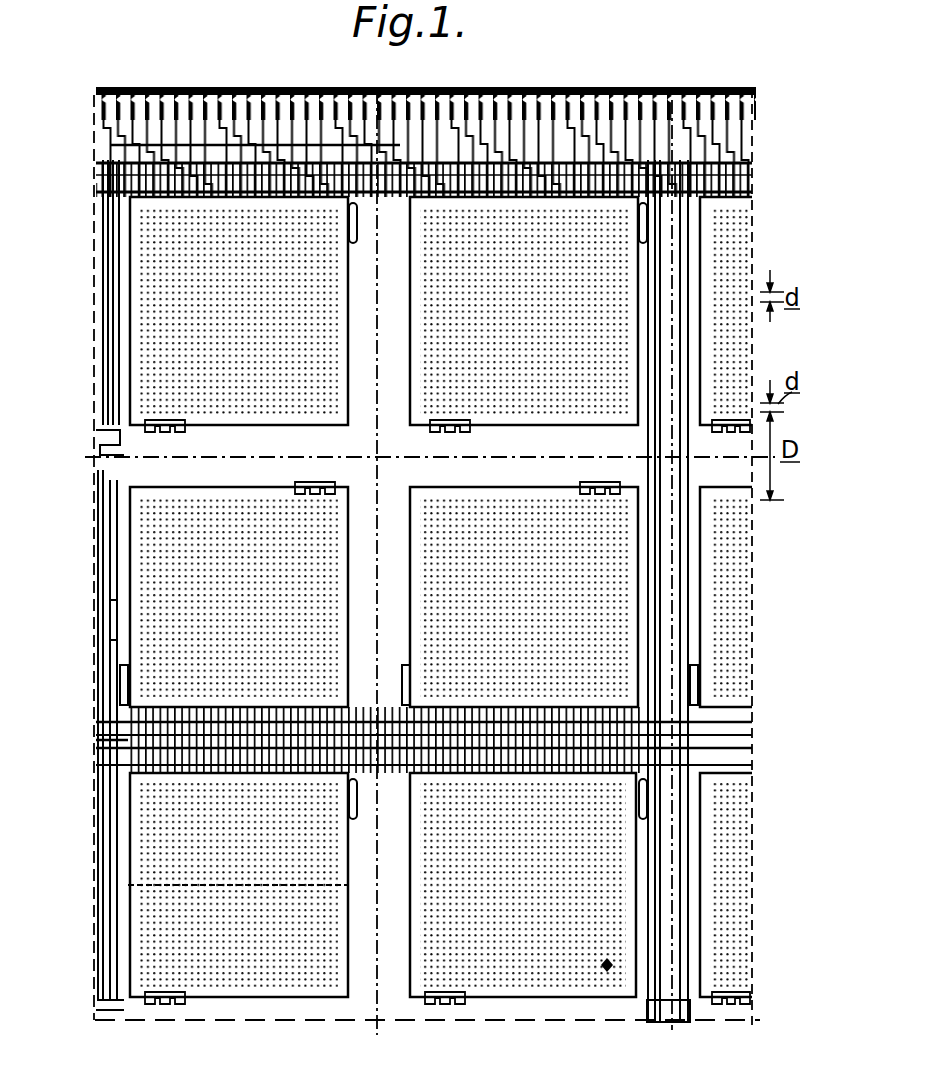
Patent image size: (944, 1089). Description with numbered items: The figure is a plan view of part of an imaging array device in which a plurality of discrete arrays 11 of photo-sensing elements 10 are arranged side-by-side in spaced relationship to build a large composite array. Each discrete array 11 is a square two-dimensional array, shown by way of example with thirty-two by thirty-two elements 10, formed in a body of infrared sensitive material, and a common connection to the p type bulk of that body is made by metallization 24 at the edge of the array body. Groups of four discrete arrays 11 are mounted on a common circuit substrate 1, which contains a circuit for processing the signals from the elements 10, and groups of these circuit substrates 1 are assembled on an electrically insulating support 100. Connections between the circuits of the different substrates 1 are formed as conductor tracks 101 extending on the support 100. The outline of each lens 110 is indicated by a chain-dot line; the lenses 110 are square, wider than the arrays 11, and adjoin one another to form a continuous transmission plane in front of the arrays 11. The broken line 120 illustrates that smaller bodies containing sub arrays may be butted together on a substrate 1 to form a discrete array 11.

The circuit substrate 1 is at (745, 198).
The photo-sensing elements 10 is at (735, 600).
The discrete array 11 is at (205, 257).
The metallization 24 is at (705, 690).
The electrically insulating support 100 is at (103, 350).
The conductor tracks 101 is at (745, 142).
The lens 110 is at (745, 735).
The broken line 120 is at (193, 885).